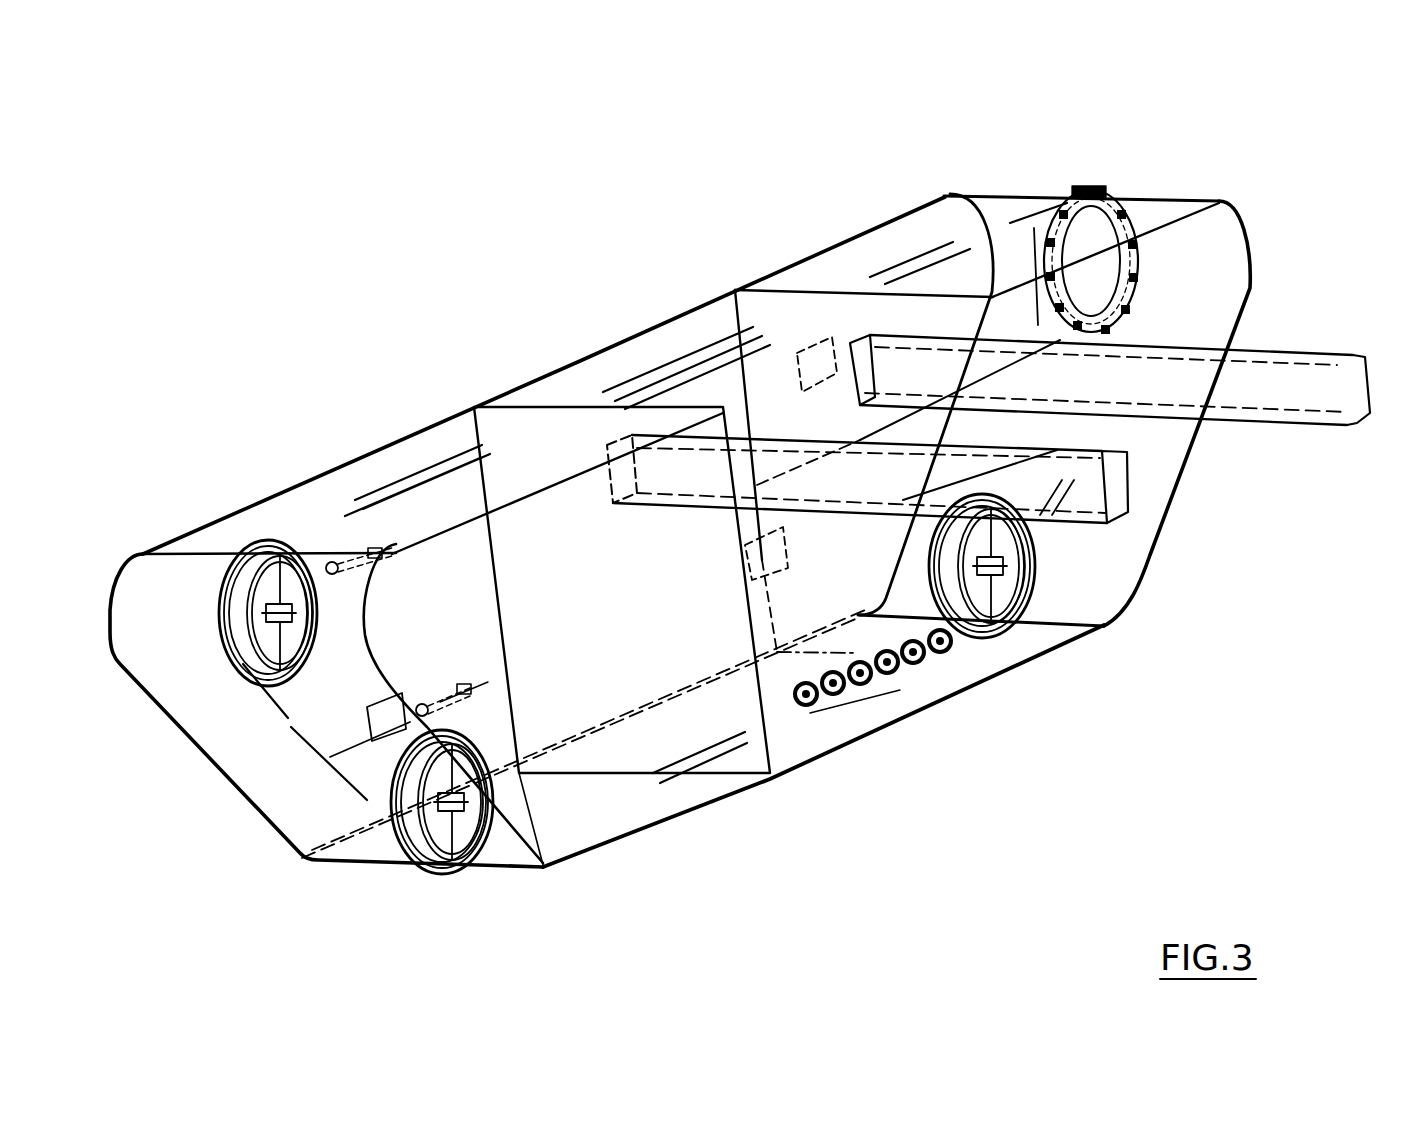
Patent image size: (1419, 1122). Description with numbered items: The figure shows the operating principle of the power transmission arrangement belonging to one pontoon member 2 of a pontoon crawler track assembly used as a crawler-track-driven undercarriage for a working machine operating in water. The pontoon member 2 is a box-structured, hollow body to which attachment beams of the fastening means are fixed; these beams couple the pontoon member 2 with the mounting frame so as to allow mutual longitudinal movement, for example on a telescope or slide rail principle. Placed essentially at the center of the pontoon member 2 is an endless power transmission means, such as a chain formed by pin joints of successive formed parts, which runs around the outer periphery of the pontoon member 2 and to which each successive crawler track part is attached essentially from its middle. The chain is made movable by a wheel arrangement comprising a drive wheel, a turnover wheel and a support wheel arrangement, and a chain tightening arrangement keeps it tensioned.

The pontoon member 2 is at (1243, 220).